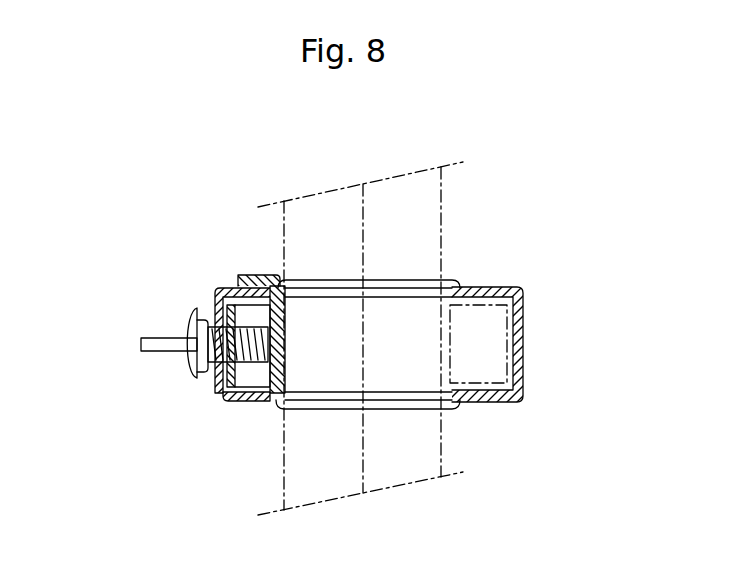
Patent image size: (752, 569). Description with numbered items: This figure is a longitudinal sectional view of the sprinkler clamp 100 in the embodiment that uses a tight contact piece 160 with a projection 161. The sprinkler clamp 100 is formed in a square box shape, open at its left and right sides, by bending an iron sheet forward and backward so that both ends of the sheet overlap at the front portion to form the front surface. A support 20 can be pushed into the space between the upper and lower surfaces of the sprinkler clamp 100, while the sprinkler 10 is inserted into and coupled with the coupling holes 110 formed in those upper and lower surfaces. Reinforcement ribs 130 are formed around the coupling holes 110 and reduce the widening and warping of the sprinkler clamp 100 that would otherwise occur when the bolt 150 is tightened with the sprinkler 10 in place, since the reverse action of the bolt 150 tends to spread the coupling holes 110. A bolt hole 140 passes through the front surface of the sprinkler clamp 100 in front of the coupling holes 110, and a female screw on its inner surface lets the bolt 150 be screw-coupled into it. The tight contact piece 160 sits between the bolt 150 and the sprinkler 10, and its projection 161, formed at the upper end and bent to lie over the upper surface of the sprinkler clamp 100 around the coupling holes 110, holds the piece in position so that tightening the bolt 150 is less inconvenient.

The sprinkler 10 is at (398, 197).
The support 20 is at (502, 343).
The sprinkler clamp 100 is at (210, 281).
The coupling holes 110 is at (277, 409).
The reinforcement ribs 130 is at (431, 281).
The bolt hole 140 is at (217, 388).
The bolt 150 is at (162, 352).
The tight contact piece 160 is at (286, 312).
The projection 161 is at (255, 274).